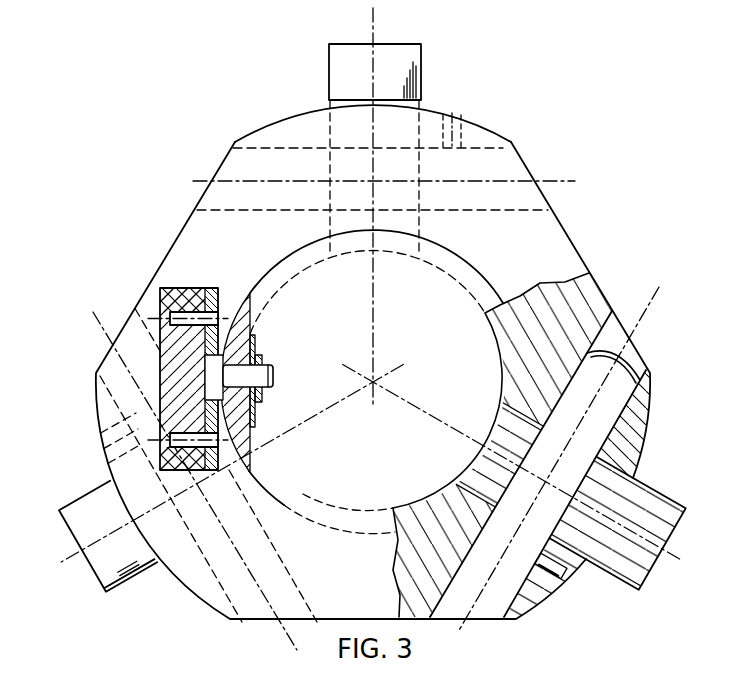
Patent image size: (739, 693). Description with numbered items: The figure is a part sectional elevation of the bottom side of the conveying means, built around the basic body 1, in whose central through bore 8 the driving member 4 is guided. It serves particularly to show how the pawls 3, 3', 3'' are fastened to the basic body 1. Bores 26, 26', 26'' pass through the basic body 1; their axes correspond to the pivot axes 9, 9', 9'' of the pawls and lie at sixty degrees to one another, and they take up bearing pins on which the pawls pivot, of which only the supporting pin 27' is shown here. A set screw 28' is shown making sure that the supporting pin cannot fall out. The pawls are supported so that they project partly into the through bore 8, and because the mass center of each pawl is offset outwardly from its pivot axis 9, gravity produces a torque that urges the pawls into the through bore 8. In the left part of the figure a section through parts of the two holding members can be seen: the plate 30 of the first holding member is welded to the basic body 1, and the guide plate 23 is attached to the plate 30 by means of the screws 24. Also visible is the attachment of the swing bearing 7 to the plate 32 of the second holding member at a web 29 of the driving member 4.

The basic body 1 is at (570, 262).
The pawl 3 is at (231, 484).
The pawl 3' is at (514, 492).
The pawl 3'' is at (389, 206).
The driving member 4 is at (447, 408).
The swing bearing 7 is at (258, 378).
The through bore 8 is at (406, 514).
The pivot axis 9 is at (190, 457).
The pivot axis 9' is at (563, 451).
The pivot axis 9'' is at (400, 179).
The guide plate 23 is at (181, 287).
The screws 24 is at (175, 310).
The bore 26 is at (194, 466).
The bore 26' is at (538, 443).
The bore 26'' is at (387, 161).
The supporting pin 27' is at (638, 410).
The set screw 28' is at (569, 586).
The web 29 is at (248, 312).
The plate 30 is at (160, 394).
The plate 32 is at (254, 420).